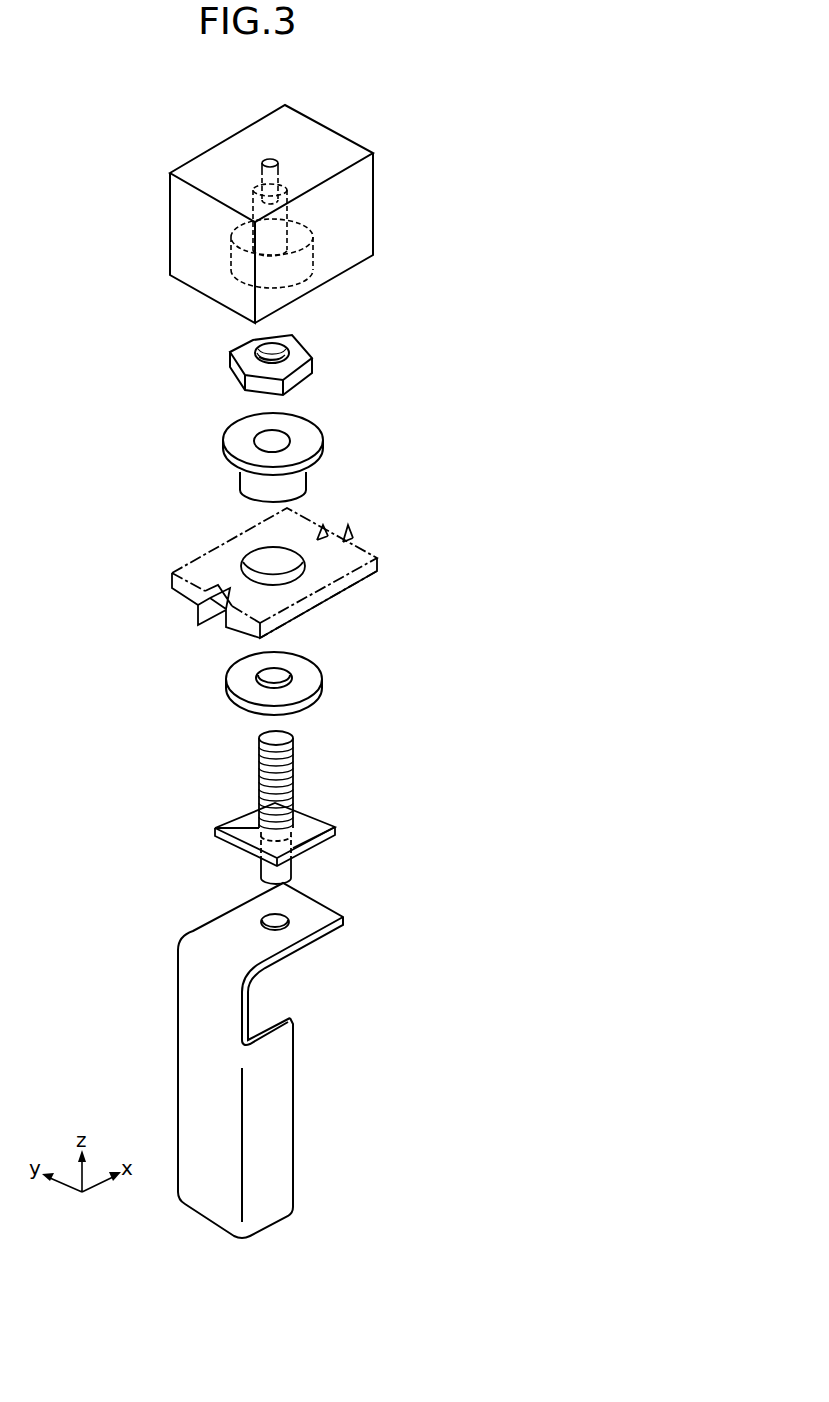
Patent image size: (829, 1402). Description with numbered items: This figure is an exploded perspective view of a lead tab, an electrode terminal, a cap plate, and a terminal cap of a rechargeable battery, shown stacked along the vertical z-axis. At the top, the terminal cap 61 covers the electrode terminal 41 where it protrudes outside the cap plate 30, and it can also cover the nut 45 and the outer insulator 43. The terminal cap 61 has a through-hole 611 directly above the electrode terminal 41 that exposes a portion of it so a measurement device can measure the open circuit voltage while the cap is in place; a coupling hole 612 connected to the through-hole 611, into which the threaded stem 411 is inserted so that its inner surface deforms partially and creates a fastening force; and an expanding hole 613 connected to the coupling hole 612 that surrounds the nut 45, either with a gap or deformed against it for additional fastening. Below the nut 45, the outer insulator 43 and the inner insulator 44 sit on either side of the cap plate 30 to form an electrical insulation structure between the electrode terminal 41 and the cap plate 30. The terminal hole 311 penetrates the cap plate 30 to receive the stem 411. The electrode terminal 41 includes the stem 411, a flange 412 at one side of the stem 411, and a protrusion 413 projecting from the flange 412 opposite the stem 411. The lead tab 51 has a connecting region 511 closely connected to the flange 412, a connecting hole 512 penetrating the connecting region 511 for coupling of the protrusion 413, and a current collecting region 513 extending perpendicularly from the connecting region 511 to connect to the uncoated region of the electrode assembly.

The terminal cap 61 is at (158, 213).
The through-hole 611 is at (263, 160).
The coupling hole 612 is at (290, 217).
The expanding hole 613 is at (305, 268).
The nut 45 is at (247, 357).
The outer insulator 43 is at (312, 437).
The cap plate 30 is at (212, 566).
The terminal hole 311 is at (303, 563).
The inner insulator 44 is at (310, 677).
The electrode terminal 41 is at (233, 778).
The stem 411 is at (287, 755).
The flange 412 is at (313, 820).
The protrusion 413 is at (282, 838).
The lead tab 51 is at (166, 951).
The connecting region 511 is at (303, 937).
The connecting hole 512 is at (267, 920).
The current collecting region 513 is at (277, 1127).